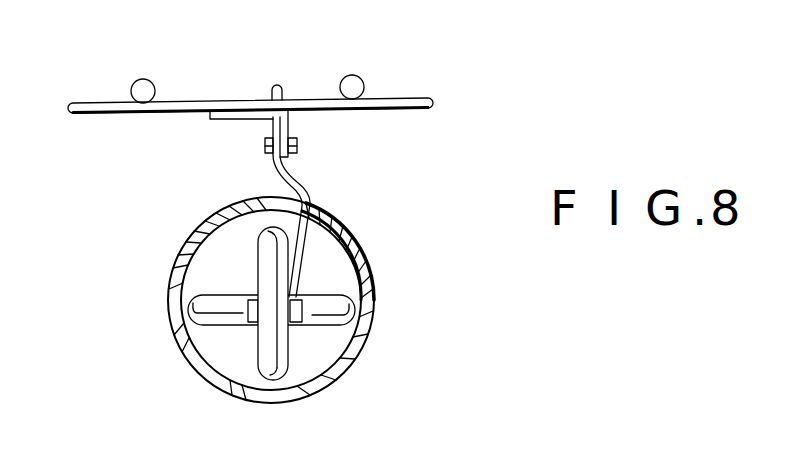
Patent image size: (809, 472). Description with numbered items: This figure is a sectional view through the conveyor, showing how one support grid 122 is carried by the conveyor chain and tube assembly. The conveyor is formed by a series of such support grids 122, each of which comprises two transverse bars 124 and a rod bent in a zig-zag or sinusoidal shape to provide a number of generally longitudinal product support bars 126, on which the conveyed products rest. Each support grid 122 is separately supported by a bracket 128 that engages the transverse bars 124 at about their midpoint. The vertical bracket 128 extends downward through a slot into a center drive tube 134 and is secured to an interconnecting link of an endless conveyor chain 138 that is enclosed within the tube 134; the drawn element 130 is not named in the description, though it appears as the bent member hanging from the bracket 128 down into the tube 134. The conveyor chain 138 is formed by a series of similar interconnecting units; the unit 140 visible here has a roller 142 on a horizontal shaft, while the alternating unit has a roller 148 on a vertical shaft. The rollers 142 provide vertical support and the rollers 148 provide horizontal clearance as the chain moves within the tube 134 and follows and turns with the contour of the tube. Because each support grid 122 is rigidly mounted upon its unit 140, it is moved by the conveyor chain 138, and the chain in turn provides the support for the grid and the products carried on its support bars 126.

The support grid 122 is at (440, 101).
The transverse bar 124 is at (187, 116).
The product support bar 126 is at (201, 38).
The bracket 128 is at (292, 120).
The wire spring 130 is at (302, 176).
The center drive tube 134 is at (375, 287).
The conveyor chain 138 is at (258, 297).
The interconnecting unit 140 is at (316, 362).
The roller 142 is at (262, 358).
The roller 148 is at (312, 324).